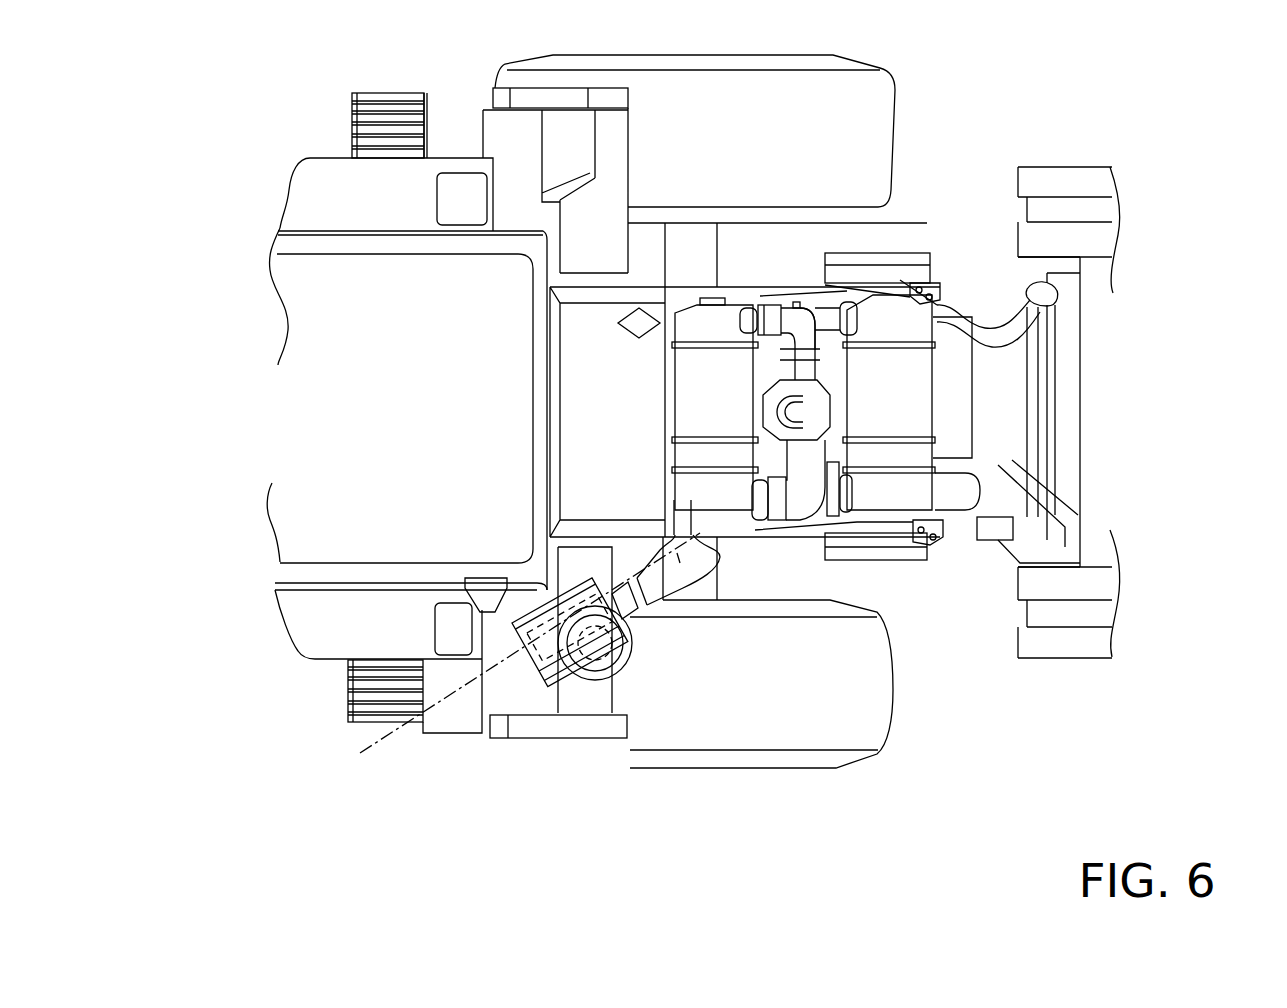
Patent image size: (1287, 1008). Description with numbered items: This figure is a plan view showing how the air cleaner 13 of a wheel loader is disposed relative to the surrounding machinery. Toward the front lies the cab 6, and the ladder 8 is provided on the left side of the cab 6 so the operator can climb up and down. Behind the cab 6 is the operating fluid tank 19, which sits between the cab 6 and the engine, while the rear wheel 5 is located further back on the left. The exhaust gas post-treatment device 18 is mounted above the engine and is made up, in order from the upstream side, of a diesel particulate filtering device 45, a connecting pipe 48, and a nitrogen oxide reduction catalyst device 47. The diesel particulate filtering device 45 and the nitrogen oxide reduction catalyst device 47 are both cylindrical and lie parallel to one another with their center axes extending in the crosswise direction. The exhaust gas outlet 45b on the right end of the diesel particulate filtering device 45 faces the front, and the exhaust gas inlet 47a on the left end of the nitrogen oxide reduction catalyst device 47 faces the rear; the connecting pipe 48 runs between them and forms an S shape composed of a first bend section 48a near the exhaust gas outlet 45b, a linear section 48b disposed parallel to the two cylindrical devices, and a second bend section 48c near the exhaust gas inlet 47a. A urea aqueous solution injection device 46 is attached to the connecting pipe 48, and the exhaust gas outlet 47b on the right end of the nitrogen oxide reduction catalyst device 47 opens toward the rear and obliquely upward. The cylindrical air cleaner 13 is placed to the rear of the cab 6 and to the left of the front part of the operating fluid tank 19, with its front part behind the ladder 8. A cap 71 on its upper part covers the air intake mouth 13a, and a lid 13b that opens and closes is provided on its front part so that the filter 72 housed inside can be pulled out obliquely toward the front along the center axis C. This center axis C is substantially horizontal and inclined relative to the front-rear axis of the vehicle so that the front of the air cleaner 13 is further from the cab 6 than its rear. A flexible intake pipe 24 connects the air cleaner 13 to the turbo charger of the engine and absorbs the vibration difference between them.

The rear wheel 5 is at (866, 733).
The cab 6 is at (350, 310).
The ladder 8 is at (348, 687).
The air cleaner 13 is at (555, 685).
The air intake mouth 13a is at (617, 677).
The lid 13b is at (540, 678).
The exhaust gas post-treatment device 18 is at (892, 365).
The operating fluid tank 19 is at (640, 306).
The intake pipe 24 is at (683, 588).
The diesel particulate filtering device 45 is at (1100, 255).
The exhaust gas outlet 45b is at (910, 285).
The urea aqueous solution injection device 46 is at (797, 302).
The nitrogen oxide reduction catalyst device 47 is at (690, 387).
The exhaust gas inlet 47a is at (805, 490).
The exhaust gas outlet 47b is at (762, 303).
The connecting pipe 48 is at (768, 447).
The first bend section 48a is at (806, 345).
The linear section 48b is at (815, 452).
The second bend section 48c is at (800, 490).
The cap 71 is at (615, 652).
The filter 72 is at (523, 683).
The center axis C is at (365, 758).